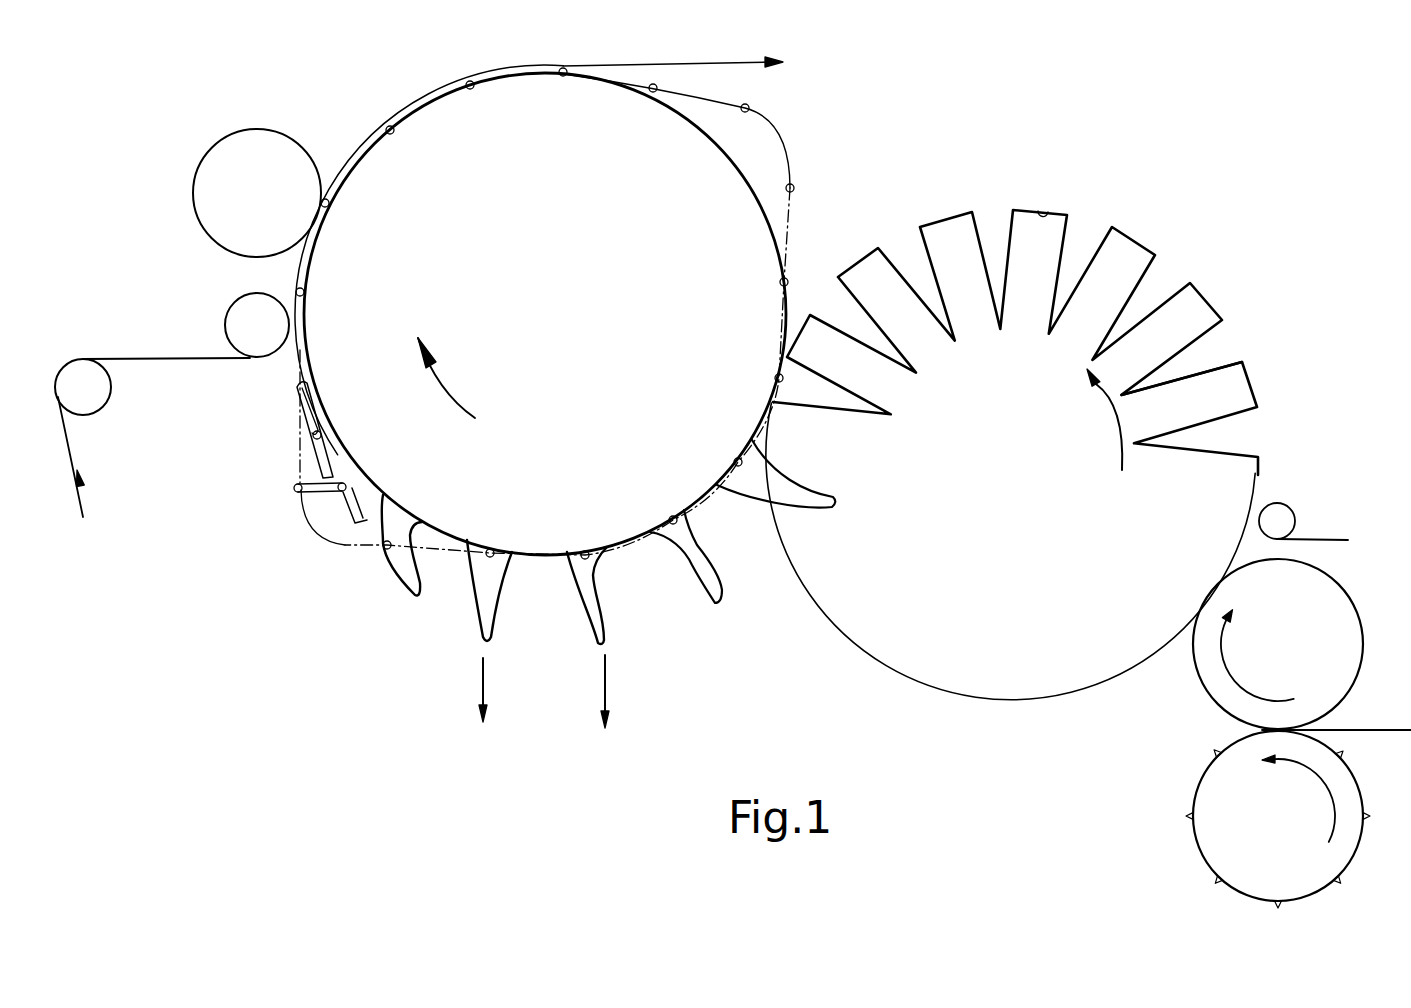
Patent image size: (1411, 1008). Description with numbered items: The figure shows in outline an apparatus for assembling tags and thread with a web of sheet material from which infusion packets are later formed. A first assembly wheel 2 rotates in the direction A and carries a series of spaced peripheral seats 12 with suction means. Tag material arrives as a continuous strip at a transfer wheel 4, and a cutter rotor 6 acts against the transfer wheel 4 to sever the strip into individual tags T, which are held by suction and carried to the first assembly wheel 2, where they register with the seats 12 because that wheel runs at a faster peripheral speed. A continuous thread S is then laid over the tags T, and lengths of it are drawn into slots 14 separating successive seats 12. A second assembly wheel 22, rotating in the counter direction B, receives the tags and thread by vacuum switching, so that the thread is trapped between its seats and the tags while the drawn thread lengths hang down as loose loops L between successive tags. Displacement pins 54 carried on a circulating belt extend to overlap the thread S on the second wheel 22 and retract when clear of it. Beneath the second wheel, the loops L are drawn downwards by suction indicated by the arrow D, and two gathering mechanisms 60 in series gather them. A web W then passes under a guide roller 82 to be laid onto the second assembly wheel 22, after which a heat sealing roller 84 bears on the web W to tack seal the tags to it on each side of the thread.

The first assembly wheel 2 is at (1013, 533).
The transfer wheel 4 is at (1311, 620).
The cutter rotor 6 is at (1214, 835).
The peripheral seats 12 is at (1048, 212).
The slots 14 is at (1203, 357).
The second assembly wheel 22 is at (552, 328).
The displacement pins 54 is at (560, 70).
The gathering mechanisms 60 is at (320, 459).
The guide roller 82 is at (242, 321).
The heat sealing roller 84 is at (274, 207).
The web W is at (147, 360).
The direction of rotation of second wheel B is at (440, 387).
The tags T is at (627, 542).
The loose loops L is at (757, 492).
The suction direction arrow D is at (607, 680).
The direction of rotation of first wheel A is at (1115, 417).
The thread S is at (1324, 540).